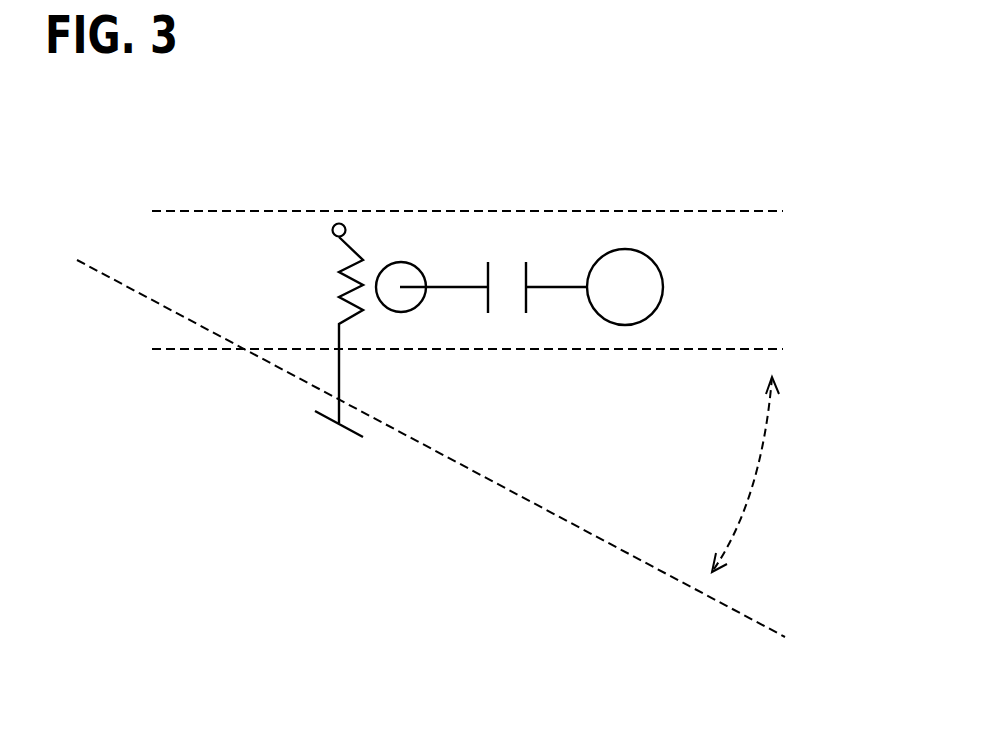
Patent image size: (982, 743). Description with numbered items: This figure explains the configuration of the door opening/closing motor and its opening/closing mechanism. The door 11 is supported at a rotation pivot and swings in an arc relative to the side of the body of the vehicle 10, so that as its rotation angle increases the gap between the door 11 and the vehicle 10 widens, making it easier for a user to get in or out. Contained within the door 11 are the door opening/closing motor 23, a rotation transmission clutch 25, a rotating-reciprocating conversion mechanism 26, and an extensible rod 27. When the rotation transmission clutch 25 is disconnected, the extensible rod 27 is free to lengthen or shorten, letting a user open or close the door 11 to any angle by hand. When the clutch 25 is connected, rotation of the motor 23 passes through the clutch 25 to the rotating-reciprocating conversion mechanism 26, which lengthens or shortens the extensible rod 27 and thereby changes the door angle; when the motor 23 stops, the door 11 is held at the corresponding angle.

The vehicle 10 is at (595, 540).
The door 11 is at (823, 208).
The door opening/closing motor 23 is at (625, 249).
The rotation transmission clutch 25 is at (527, 300).
The rotating-reciprocating conversion mechanism 26 is at (376, 249).
The extensible rod 27 is at (339, 385).